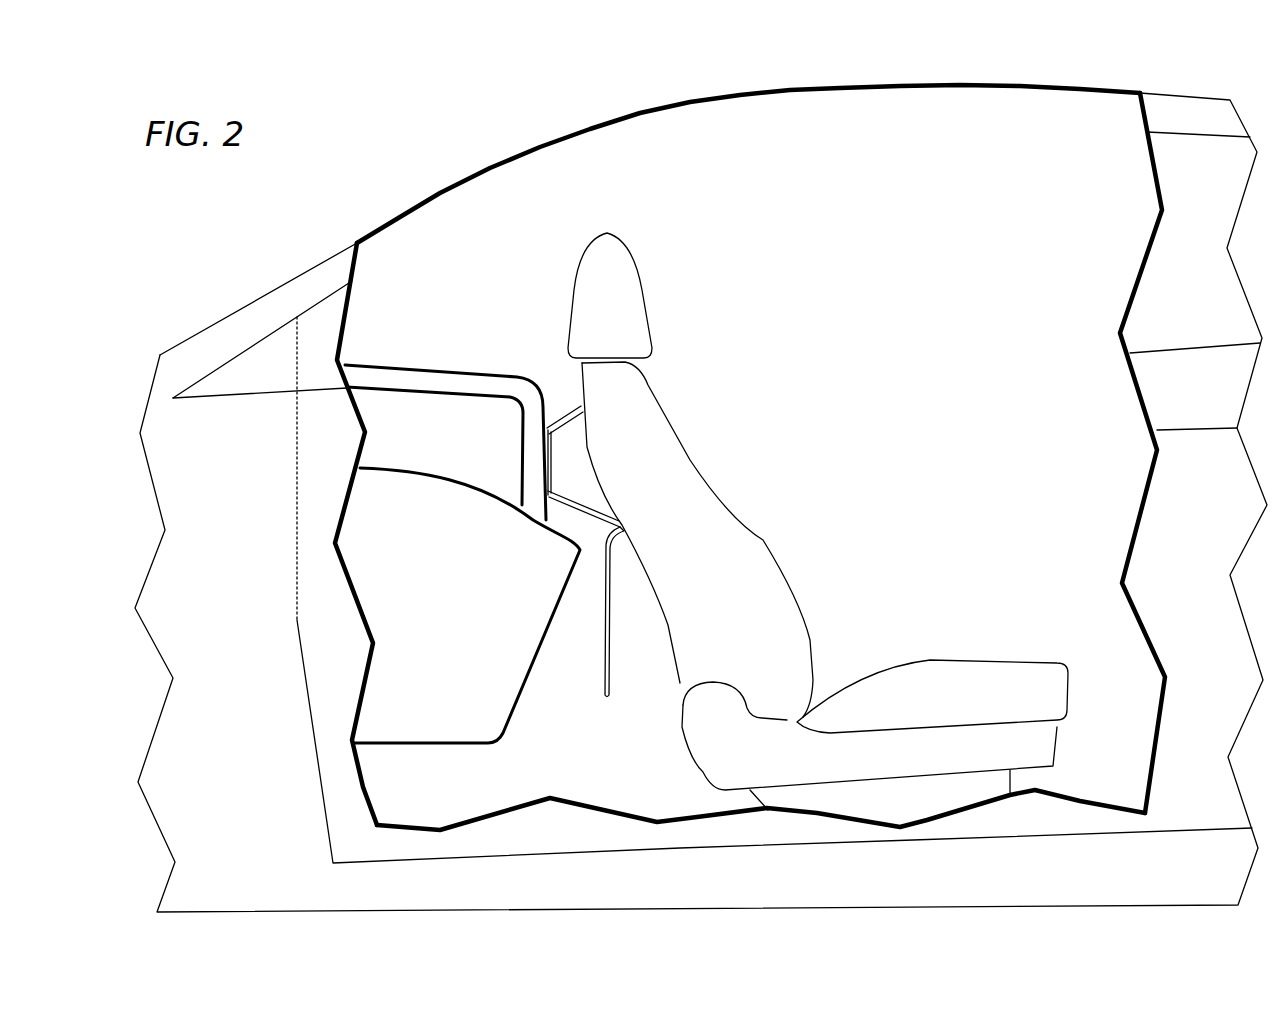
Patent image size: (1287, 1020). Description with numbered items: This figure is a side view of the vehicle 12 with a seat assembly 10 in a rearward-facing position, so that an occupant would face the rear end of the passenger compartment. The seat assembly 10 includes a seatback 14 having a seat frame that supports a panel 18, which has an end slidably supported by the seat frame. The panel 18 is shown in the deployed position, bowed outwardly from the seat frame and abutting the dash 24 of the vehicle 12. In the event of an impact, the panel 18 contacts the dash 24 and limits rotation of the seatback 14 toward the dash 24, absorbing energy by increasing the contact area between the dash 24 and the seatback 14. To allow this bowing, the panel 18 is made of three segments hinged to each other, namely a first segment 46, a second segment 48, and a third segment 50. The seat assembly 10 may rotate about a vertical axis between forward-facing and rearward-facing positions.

The seat assembly 10 is at (666, 497).
The vehicle 12 is at (918, 63).
The seatback 14 is at (763, 542).
The panel 18 is at (593, 526).
The dash 24 is at (457, 422).
The first segment 46 is at (550, 460).
The second segment 48 is at (577, 513).
The third segment 50 is at (563, 417).